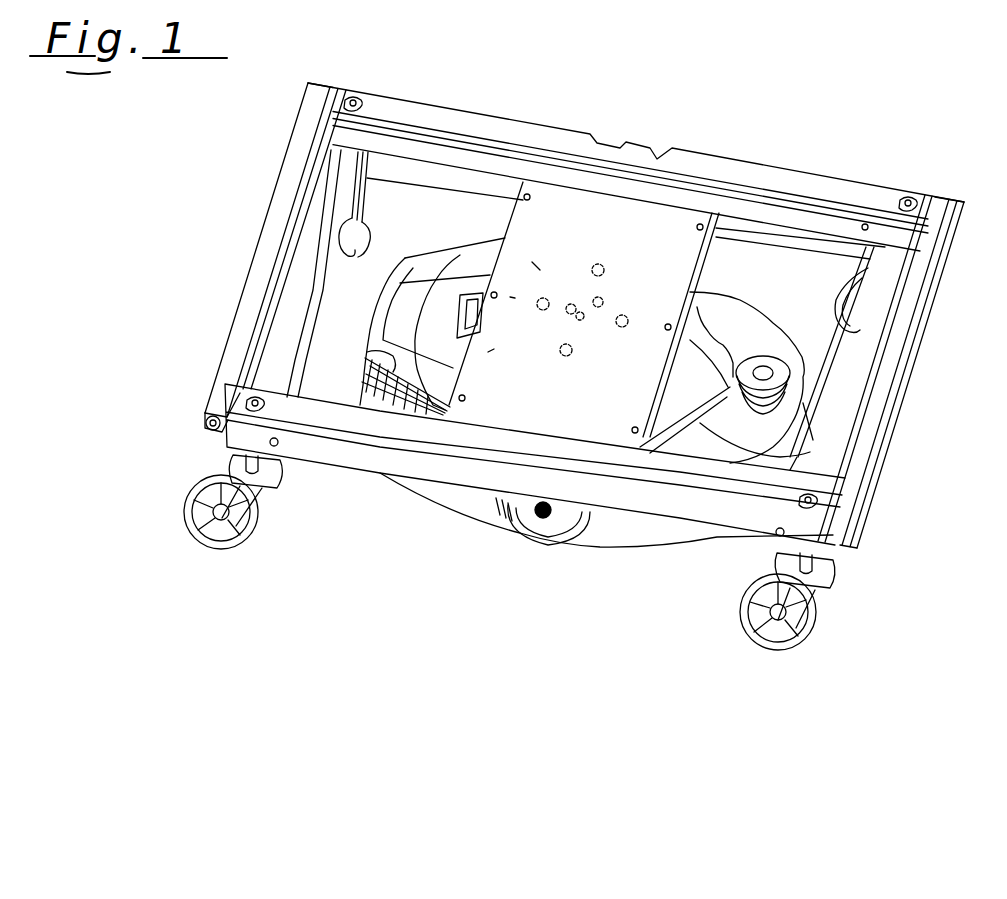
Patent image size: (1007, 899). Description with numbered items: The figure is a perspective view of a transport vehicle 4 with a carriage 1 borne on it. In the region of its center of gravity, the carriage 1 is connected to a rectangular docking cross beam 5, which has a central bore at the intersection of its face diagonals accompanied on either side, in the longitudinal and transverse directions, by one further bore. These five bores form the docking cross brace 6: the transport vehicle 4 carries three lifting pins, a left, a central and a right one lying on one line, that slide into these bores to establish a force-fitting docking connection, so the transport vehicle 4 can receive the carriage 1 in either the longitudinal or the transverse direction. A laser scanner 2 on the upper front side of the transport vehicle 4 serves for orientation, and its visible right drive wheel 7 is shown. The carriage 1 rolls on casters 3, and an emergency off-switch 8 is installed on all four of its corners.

The carriage 1 is at (266, 222).
The laser scanner 2 is at (768, 368).
The casters 3 is at (810, 607).
The transport vehicle 4 is at (660, 533).
The docking cross beam 5 is at (523, 390).
The docking cross brace 6 is at (573, 357).
The right drive wheel 7 is at (552, 525).
The emergency off-switch 8 is at (200, 437).